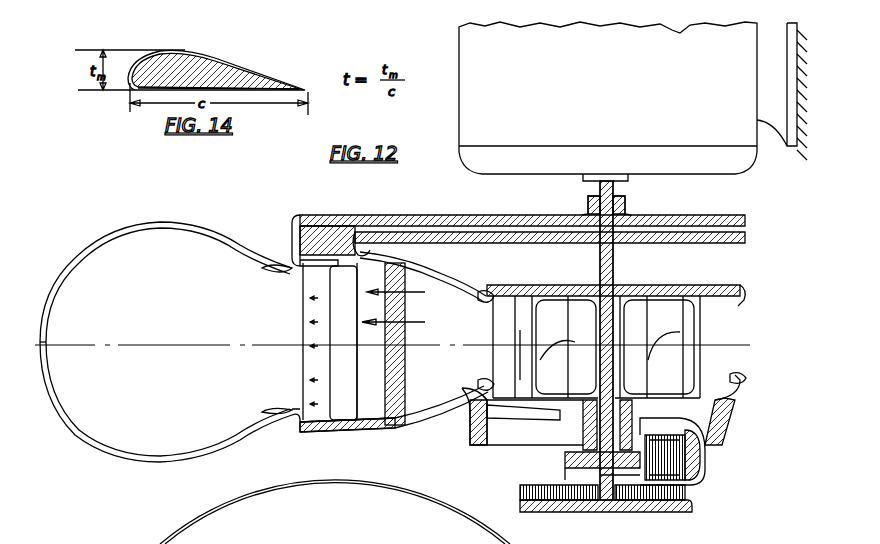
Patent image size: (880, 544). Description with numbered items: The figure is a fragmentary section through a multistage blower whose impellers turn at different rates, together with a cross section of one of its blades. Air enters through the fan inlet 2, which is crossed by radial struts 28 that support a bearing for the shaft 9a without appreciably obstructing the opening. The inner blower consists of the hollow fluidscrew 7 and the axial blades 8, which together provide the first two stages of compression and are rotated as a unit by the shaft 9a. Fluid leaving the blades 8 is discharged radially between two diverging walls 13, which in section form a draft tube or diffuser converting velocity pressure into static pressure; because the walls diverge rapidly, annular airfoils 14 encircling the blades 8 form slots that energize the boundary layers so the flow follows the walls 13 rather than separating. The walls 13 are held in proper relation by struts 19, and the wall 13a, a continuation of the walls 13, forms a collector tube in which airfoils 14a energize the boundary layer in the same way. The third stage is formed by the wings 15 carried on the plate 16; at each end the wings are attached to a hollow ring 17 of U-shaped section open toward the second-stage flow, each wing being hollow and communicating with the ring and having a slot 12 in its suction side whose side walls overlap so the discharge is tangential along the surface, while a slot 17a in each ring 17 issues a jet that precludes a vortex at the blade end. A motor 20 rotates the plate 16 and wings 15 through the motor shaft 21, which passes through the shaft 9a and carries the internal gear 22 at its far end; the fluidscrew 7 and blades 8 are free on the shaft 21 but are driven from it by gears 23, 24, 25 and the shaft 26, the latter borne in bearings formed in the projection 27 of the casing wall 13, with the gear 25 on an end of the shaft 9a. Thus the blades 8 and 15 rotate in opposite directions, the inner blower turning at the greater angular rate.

In FIG. 12, the fan inlet 2 is at (530, 418).
In FIG. 12, the hollow fluidscrew 7 is at (487, 438).
In FIG. 12, the axial blades 8 is at (520, 330).
In FIG. 12, the shaft 9a is at (615, 312).
In FIG. 14, the slot 12 is at (188, 52).
In FIG. 12, the slot 12 is at (328, 344).
In FIG. 12, the diverging walls 13 is at (440, 280).
In FIG. 12, the wall 13a is at (130, 233).
In FIG. 12, the annular airfoils 14 is at (480, 384).
In FIG. 12, the airfoils 14a is at (266, 270).
In FIG. 14, the wings 15 is at (232, 62).
In FIG. 12, the wings 15 is at (308, 312).
In FIG. 12, the plate 16 is at (350, 222).
In FIG. 12, the hollow ring 17 is at (292, 232).
In FIG. 12, the slot 17a is at (290, 432).
In FIG. 12, the struts 19 is at (387, 428).
In FIG. 12, the motor 20 is at (633, 98).
In FIG. 12, the motor shaft 21 is at (620, 186).
In FIG. 12, the internal gear 22 is at (668, 512).
In FIG. 12, the gear 23 is at (688, 492).
In FIG. 12, the gear 24 is at (686, 458).
In FIG. 12, the gear 25 is at (565, 456).
In FIG. 12, the shaft 26 is at (702, 437).
In FIG. 12, the projection 27 is at (690, 468).
In FIG. 12, the radial struts 28 is at (728, 408).